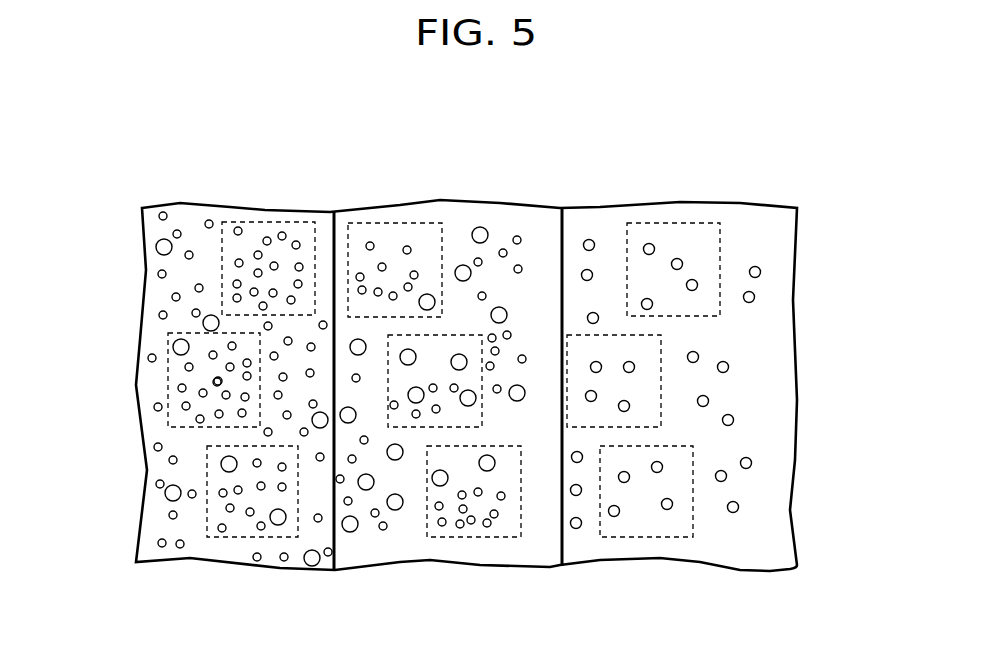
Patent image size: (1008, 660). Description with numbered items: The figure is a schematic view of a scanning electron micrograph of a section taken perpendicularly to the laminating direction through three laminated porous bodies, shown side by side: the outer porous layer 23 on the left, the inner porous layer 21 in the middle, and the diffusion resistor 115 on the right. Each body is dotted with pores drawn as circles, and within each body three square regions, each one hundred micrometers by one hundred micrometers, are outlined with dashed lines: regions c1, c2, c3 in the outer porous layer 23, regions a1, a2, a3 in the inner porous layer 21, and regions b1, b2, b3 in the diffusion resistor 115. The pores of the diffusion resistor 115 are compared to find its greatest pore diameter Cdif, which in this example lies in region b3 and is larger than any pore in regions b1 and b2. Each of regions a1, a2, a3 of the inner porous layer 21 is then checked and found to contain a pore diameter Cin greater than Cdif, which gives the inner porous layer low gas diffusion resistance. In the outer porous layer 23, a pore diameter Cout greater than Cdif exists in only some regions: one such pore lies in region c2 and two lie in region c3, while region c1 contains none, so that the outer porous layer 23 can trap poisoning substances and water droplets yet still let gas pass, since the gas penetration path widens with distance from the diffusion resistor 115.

The outer porous layer 23 is at (268, 204).
The inner porous layer 21 is at (467, 196).
The diffusion resistor 115 is at (679, 196).
The region of outer porous layer c1 is at (237, 222).
The region of outer porous layer c2 is at (168, 387).
The region of outer porous layer c3 is at (247, 537).
The region of inner porous layer a1 is at (395, 222).
The region of inner porous layer a2 is at (479, 335).
The region of inner porous layer a3 is at (503, 537).
The region of diffusion resistor b1 is at (714, 222).
The region of diffusion resistor b2 is at (661, 343).
The region of diffusion resistor b3 is at (678, 537).
The pore diameter Cout is at (171, 343).
The pore diameter Cin is at (403, 369).
The greatest pore diameter Cdif is at (668, 462).